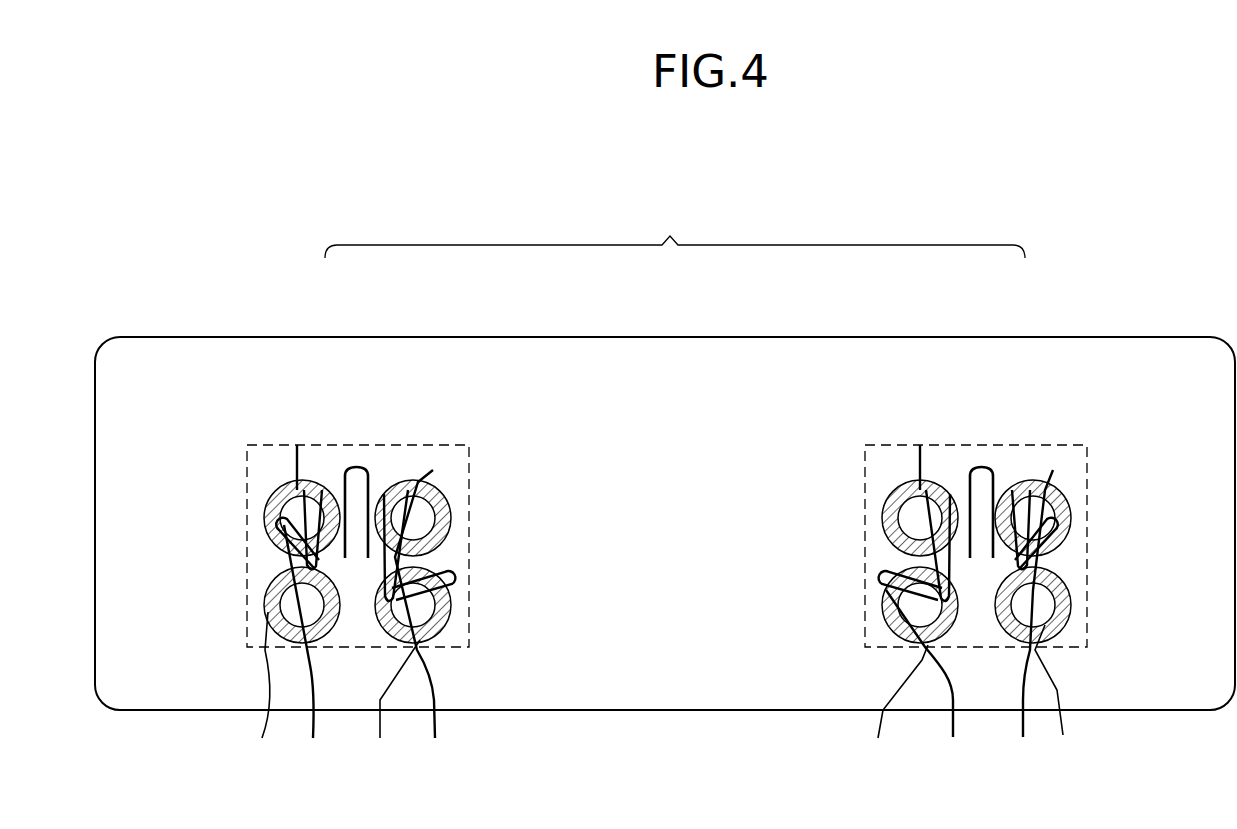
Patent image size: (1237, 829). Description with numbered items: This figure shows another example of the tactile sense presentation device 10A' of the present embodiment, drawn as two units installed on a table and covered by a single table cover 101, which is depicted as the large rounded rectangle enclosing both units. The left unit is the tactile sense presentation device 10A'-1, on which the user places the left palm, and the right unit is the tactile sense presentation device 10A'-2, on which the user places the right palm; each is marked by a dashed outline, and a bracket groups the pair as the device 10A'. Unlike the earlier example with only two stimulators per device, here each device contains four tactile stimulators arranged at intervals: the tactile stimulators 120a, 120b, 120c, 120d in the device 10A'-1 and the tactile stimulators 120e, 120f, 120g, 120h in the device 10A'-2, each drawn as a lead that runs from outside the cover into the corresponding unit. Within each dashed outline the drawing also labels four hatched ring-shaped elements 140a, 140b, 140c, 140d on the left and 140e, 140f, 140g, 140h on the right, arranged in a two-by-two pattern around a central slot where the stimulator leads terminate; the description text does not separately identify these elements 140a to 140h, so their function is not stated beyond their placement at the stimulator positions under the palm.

The table cover 101 is at (1155, 352).
The tactile sense presentation device 10A' is at (675, 231).
The tactile sense presentation device 10A'-1 is at (358, 458).
The tactile sense presentation device 10A'-2 is at (976, 457).
The tactile stimulator 120a is at (297, 445).
The tactile stimulator 120b is at (433, 470).
The tactile stimulator 120c is at (257, 691).
The tactile stimulator 120d is at (425, 670).
The tactile stimulator 120e is at (920, 445).
The tactile stimulator 120f is at (1053, 470).
The tactile stimulator 120g is at (905, 669).
The tactile stimulator 120h is at (1061, 696).
The ring terminal 140a is at (262, 511).
The ring terminal 140b is at (453, 512).
The ring terminal 140c is at (262, 598).
The ring terminal 140d is at (453, 599).
The ring terminal 140e is at (880, 511).
The ring terminal 140f is at (1073, 512).
The ring terminal 140g is at (880, 598).
The ring terminal 140h is at (1073, 599).